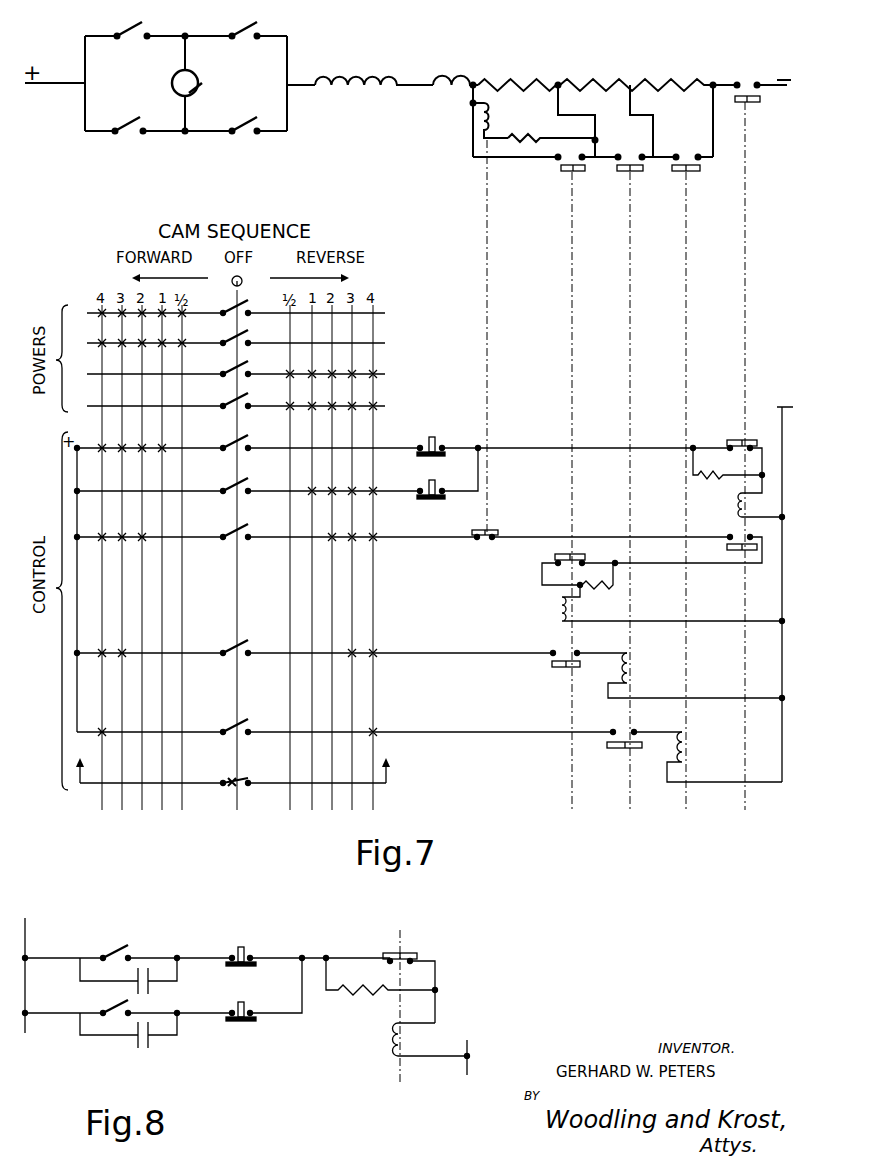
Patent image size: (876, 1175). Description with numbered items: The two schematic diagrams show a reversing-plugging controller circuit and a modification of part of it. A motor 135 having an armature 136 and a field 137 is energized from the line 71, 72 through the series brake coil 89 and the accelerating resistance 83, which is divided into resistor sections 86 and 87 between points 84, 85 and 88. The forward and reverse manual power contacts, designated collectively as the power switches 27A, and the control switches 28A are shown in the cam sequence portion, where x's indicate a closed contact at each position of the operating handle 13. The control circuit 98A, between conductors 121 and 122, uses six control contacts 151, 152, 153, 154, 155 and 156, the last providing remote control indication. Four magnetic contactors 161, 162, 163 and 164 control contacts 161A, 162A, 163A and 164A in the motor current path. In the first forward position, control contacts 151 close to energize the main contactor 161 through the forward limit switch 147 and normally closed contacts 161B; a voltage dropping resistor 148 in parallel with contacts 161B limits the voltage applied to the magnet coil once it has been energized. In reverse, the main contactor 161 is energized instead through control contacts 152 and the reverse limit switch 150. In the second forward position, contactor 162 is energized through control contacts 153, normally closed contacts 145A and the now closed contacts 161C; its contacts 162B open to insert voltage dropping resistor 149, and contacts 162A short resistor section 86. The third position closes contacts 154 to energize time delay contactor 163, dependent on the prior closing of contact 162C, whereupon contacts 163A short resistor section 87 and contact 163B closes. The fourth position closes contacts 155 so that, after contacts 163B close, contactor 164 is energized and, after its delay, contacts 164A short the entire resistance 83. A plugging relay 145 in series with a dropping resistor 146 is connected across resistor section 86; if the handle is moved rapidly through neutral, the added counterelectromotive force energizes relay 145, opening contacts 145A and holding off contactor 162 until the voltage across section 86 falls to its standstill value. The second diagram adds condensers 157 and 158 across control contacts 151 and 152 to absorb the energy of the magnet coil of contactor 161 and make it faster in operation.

In FIG. 7, the operating handle 13 is at (243, 279).
In FIG. 7, the power switches 27A is at (46, 431).
In FIG. 7, the control switches 28A is at (43, 678).
In FIG. 7, the line 71 is at (84, 88).
In FIG. 7, the line 72 is at (782, 90).
In FIG. 7, the accelerating resistance 83 is at (572, 80).
In FIG. 7, the resistor tap 84 is at (713, 80).
In FIG. 7, the junction 85 is at (453, 120).
In FIG. 7, the resistor section 86 is at (548, 78).
In FIG. 7, the resistor section 87 is at (593, 95).
In FIG. 7, the resistor tap 88 is at (659, 95).
In FIG. 7, the series brake coil 89 is at (450, 77).
In FIG. 7, the control circuit 98A is at (549, 428).
In FIG. 7, the control circuit positive conductor 121 is at (77, 470).
In FIG. 8, the control circuit positive conductor 121 is at (27, 930).
In FIG. 7, the control circuit negative conductor 122 is at (781, 731).
In FIG. 8, the control circuit negative conductor 122 is at (467, 1040).
In FIG. 7, the motor 135 is at (195, 74).
In FIG. 7, the armature 136 is at (200, 88).
In FIG. 7, the field 137 is at (325, 78).
In FIG. 7, the plugging relay 145 is at (493, 118).
In FIG. 7, the normally closed contacts 145A is at (490, 530).
In FIG. 7, the dropping resistor 146 is at (522, 137).
In FIG. 7, the forward limit switch 147 is at (432, 437).
In FIG. 8, the forward limit switch 147 is at (244, 950).
In FIG. 7, the voltage dropping resistor 148 is at (716, 480).
In FIG. 8, the voltage dropping resistor 148 is at (366, 998).
In FIG. 7, the voltage dropping resistor 149 is at (606, 584).
In FIG. 7, the reverse limit switch 150 is at (436, 488).
In FIG. 8, the reverse limit switch 150 is at (247, 1010).
In FIG. 7, the control contacts 151 is at (231, 441).
In FIG. 8, the control contacts 151 is at (120, 942).
In FIG. 7, the control contacts 152 is at (231, 484).
In FIG. 8, the control contacts 152 is at (128, 1003).
In FIG. 7, the control contacts 153 is at (232, 531).
In FIG. 7, the control contacts 154 is at (231, 645).
In FIG. 7, the control contacts 155 is at (231, 724).
In FIG. 7, the control contact 156 is at (229, 778).
In FIG. 8, the condenser 157 is at (150, 989).
In FIG. 8, the condenser 158 is at (151, 1040).
In FIG. 7, the main contactor 161 is at (735, 511).
In FIG. 8, the main contactor 161 is at (391, 1041).
In FIG. 7, the contacts 161A is at (747, 93).
In FIG. 7, the normally closed contacts 161B is at (745, 439).
In FIG. 8, the normally closed contacts 161B is at (410, 953).
In FIG. 7, the contacts 161C is at (752, 552).
In FIG. 7, the acceleration contactor 162 is at (568, 611).
In FIG. 7, the contacts 162A is at (567, 173).
In FIG. 7, the contacts 162B is at (555, 559).
In FIG. 7, the contact 162C is at (566, 667).
In FIG. 7, the acceleration contactor 163 is at (628, 658).
In FIG. 7, the contacts 163A is at (630, 173).
In FIG. 7, the contact 163B is at (623, 749).
In FIG. 7, the acceleration contactor 164 is at (684, 736).
In FIG. 7, the contacts 164A is at (688, 173).